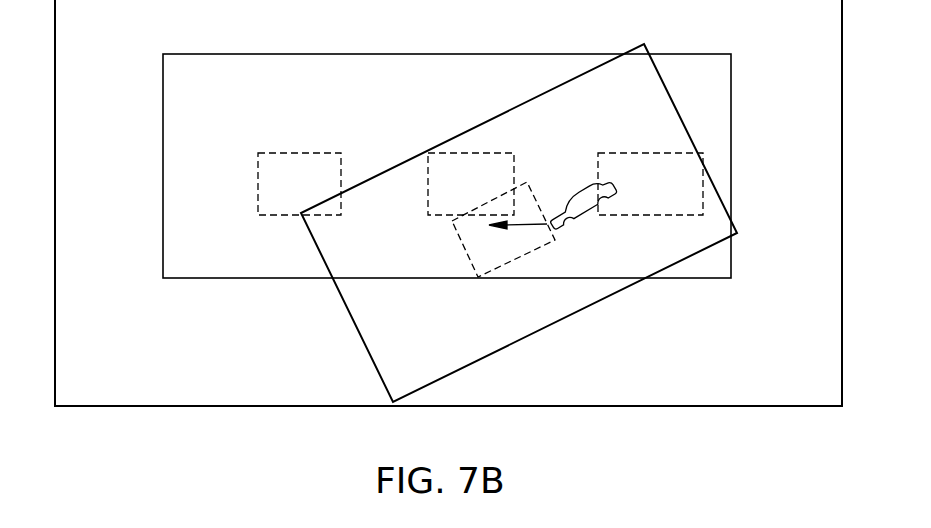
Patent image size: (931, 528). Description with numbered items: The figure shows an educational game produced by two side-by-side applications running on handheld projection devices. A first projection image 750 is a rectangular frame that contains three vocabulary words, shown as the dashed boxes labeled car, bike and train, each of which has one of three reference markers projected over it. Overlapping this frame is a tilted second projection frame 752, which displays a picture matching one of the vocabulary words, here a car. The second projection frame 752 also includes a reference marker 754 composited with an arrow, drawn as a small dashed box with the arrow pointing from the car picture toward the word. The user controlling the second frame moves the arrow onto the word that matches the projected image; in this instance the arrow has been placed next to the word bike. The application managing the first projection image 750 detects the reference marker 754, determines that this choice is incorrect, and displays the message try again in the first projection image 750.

The first projection image 750 is at (278, 54).
The second projection frame 752 is at (682, 120).
The reference marker 754 is at (473, 267).